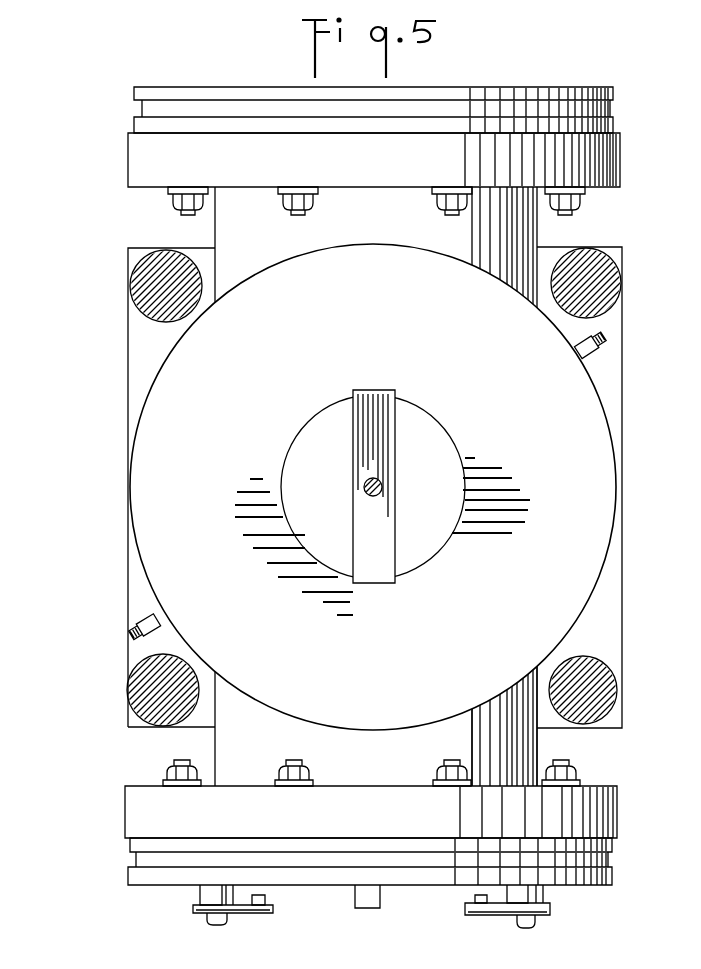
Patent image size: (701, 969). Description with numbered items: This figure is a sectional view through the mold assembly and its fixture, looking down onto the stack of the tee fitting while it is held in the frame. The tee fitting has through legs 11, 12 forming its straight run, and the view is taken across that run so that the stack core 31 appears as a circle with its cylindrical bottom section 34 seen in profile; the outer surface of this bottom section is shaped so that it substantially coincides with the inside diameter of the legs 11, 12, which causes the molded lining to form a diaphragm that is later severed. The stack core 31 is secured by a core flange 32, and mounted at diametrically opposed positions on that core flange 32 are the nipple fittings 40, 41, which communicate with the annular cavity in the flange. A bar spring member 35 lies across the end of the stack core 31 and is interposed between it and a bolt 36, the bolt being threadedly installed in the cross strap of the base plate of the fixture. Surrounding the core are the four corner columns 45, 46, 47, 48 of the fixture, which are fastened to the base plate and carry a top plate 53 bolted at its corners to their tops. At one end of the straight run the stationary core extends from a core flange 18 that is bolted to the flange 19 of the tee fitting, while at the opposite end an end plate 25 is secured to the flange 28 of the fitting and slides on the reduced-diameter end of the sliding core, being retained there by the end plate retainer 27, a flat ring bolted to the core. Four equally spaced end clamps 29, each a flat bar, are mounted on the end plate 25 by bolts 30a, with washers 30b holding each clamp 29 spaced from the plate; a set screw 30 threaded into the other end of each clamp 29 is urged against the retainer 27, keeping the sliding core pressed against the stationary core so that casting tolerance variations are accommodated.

The through leg 11 is at (530, 229).
The through leg 12 is at (532, 748).
The core flange 18 is at (614, 92).
The flange of the tee fitting 19 is at (621, 157).
The end plate 25 is at (613, 868).
The end plate retainer 27 is at (387, 890).
The flange of the tee fitting 28 is at (617, 797).
The end clamp 29 is at (502, 912).
The set screw 30 is at (475, 902).
The bolt 30a is at (550, 940).
The washer 30b is at (565, 903).
The stack core 31 is at (438, 543).
The core flange 32 is at (600, 467).
The cylindrical bottom section 34 is at (335, 493).
The bar spring member 35 is at (387, 452).
The bolt 36 is at (380, 492).
The nipple fitting 40 is at (132, 630).
The nipple fitting 41 is at (600, 345).
The column 45 is at (142, 292).
The column 46 is at (135, 706).
The column 47 is at (617, 680).
The column 48 is at (622, 288).
The top plate 53 is at (612, 603).